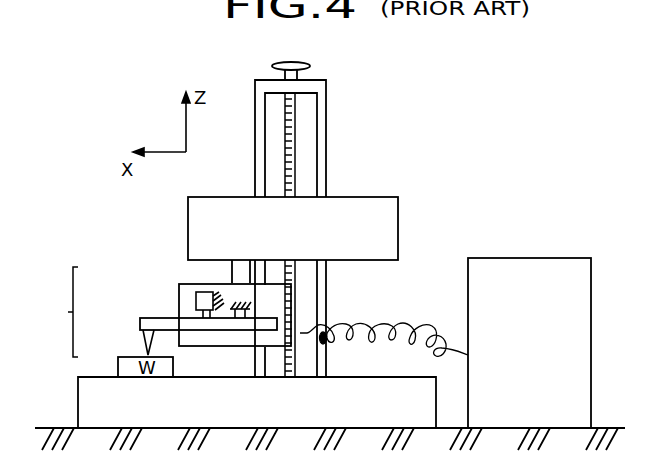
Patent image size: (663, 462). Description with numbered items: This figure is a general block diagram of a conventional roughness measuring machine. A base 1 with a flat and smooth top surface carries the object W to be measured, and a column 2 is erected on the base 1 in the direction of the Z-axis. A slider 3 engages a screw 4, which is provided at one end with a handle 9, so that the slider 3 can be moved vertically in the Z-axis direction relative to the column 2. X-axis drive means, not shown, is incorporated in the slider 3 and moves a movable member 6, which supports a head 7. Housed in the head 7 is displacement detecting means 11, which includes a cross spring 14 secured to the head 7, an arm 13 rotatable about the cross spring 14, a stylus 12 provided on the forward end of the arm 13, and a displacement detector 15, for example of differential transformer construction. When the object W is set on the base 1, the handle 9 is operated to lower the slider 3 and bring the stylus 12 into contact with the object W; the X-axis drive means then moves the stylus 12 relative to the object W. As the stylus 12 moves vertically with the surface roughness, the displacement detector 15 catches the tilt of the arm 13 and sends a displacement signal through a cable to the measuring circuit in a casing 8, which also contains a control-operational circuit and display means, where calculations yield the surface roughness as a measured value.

The base 1 is at (78, 392).
The column 2 is at (315, 86).
The slider 3 is at (357, 205).
The screw 4 is at (295, 157).
The movable member 6 is at (232, 277).
The head 7 is at (280, 310).
The casing 8 is at (537, 258).
The handle 9 is at (292, 61).
The displacement detecting means 11 is at (60, 312).
The stylus 12 is at (143, 341).
The arm 13 is at (140, 320).
The cross spring 14 is at (233, 313).
The displacement detector 15 is at (196, 297).